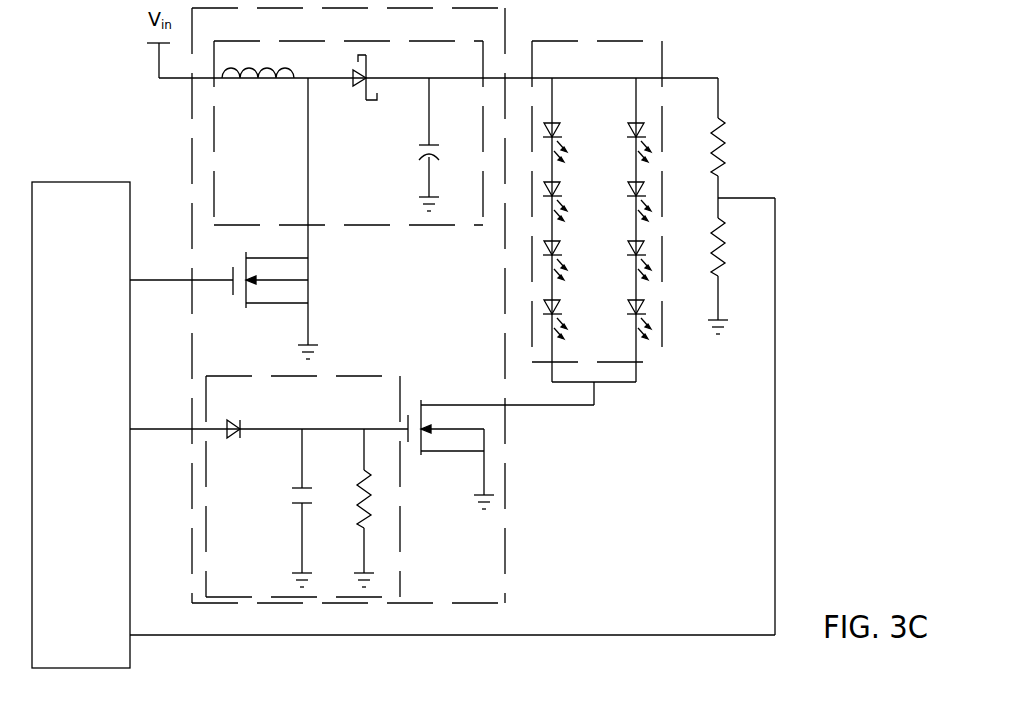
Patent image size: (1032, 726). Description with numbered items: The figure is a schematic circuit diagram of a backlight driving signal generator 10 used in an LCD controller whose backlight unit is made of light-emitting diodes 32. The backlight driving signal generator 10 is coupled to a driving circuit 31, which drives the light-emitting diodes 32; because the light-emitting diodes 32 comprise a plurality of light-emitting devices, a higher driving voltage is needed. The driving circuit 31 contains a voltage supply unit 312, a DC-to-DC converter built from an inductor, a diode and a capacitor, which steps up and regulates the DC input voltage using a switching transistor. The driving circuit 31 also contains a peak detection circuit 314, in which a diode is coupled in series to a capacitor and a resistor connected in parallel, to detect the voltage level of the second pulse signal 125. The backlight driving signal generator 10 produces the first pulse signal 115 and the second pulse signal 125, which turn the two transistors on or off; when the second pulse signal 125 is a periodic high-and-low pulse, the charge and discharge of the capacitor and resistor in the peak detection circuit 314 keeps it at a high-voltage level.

The backlight driving signal generator 10 is at (88, 182).
The first pulse signal 115 is at (157, 279).
The second pulse signal 125 is at (160, 427).
The driving circuit 31 is at (505, 504).
The voltage supply unit 312 is at (445, 226).
The peak detection circuit 314 is at (400, 540).
The light-emitting diodes 32 is at (655, 362).